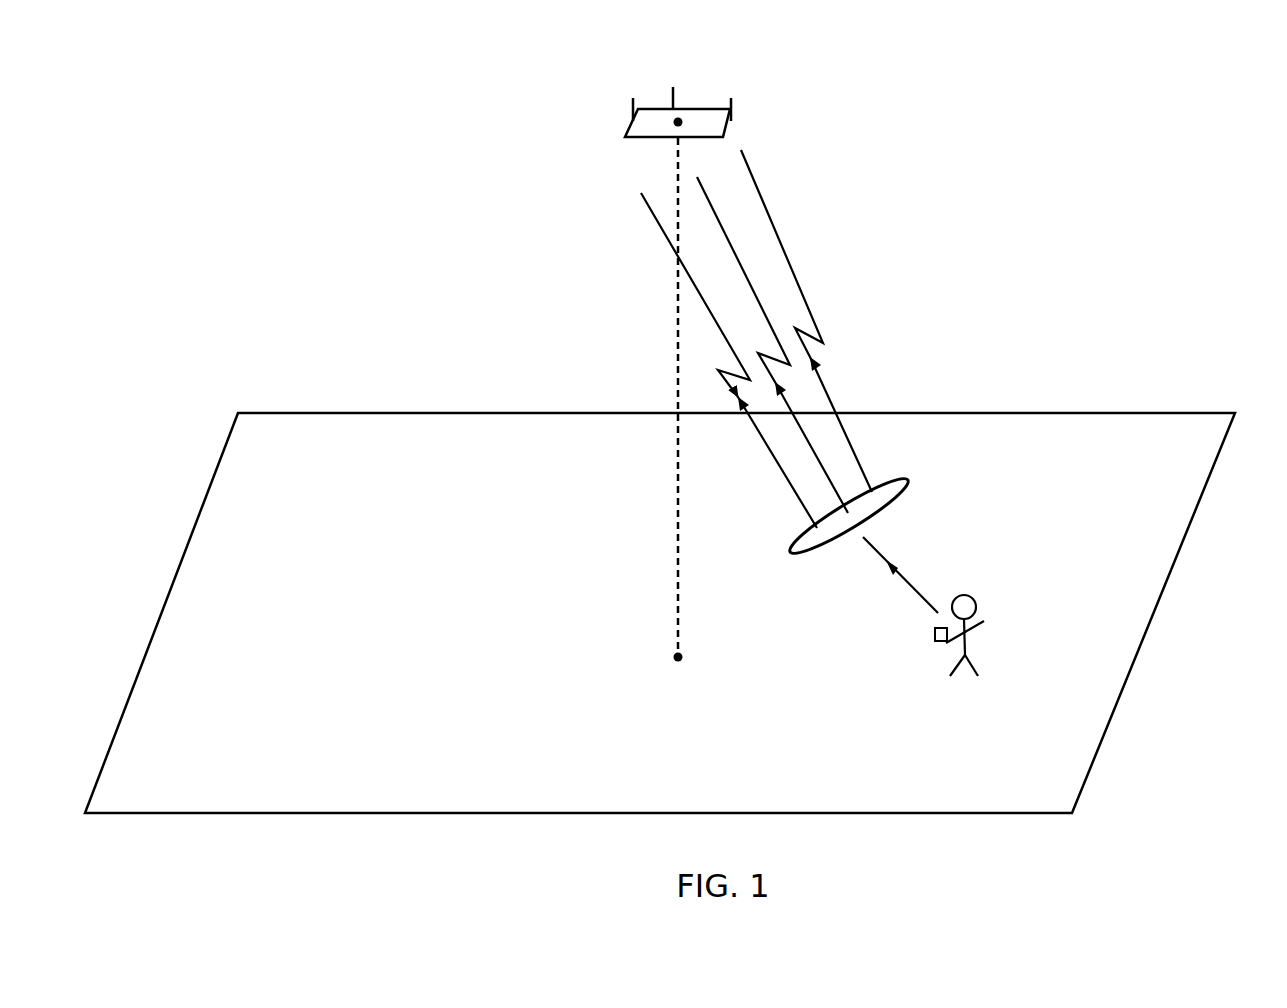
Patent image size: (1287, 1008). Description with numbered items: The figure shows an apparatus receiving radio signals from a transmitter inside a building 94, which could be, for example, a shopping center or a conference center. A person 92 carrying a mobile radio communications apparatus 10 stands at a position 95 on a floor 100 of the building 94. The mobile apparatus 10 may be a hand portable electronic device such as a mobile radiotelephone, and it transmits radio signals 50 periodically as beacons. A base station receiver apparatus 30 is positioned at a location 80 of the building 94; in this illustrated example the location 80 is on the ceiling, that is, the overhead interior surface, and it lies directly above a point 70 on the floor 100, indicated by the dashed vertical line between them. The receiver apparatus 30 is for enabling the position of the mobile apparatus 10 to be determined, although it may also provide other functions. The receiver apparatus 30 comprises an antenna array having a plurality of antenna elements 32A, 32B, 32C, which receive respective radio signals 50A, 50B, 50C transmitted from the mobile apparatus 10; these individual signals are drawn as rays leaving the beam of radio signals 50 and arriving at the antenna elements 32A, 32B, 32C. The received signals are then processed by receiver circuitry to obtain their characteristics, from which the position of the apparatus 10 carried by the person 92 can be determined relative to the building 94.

The mobile radio communications apparatus 10 is at (934, 636).
The base station receiver apparatus 30 is at (716, 154).
The antenna element 32A is at (629, 118).
The antenna element 32B is at (668, 90).
The antenna element 32C is at (736, 118).
The radio signals 50 is at (905, 482).
The radio signal 50A is at (666, 240).
The radio signal 50B is at (806, 444).
The radio signal 50C is at (800, 280).
The point on the floor 70 is at (674, 660).
The location of the receiver apparatus 80 is at (684, 118).
The person 92 is at (1038, 577).
The building 94 is at (1214, 322).
The position 95 is at (971, 631).
The floor 100 is at (478, 811).